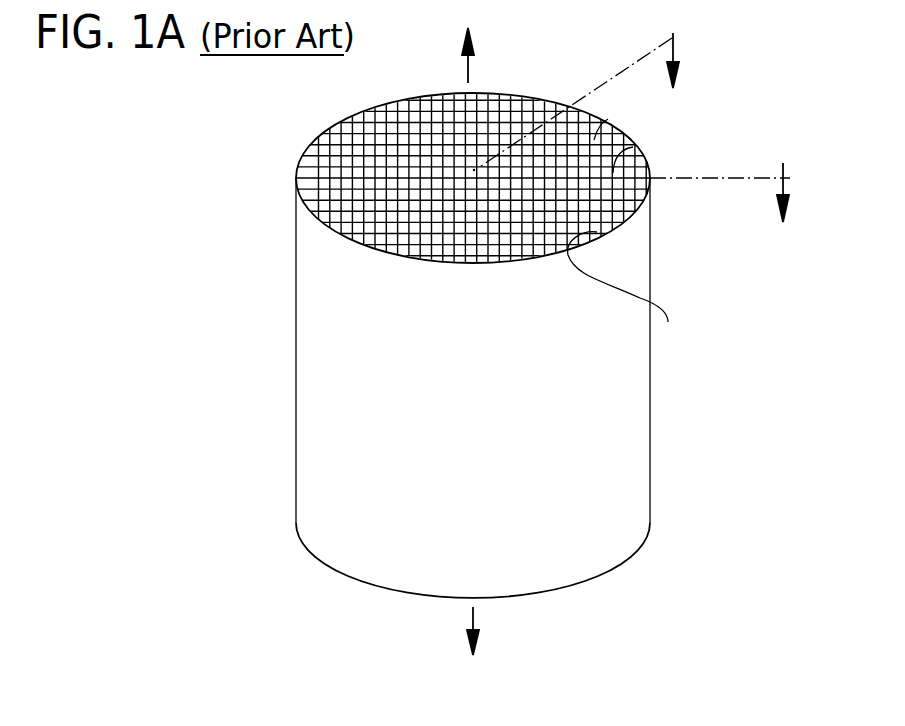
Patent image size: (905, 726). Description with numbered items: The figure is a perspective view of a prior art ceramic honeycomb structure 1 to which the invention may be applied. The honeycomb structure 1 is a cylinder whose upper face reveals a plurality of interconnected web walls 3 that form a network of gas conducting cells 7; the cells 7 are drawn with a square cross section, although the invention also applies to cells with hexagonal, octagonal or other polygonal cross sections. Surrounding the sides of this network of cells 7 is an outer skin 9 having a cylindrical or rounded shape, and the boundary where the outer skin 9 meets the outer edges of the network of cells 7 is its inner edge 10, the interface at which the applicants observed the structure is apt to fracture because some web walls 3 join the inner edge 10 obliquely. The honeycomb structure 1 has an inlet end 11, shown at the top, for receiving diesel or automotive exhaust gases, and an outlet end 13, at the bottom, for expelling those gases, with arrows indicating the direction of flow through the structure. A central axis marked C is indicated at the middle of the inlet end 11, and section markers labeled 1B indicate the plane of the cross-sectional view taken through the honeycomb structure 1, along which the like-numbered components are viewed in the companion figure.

The honeycomb structure 1 is at (240, 321).
The web walls 3 is at (318, 180).
The gas conducting cells 7 is at (590, 118).
The outer skin 9 is at (637, 228).
The inner edge 10 is at (627, 289).
The inlet end 11 is at (452, 94).
The outlet end 13 is at (525, 597).
The central axis C is at (476, 173).
The section line 1B- 1B is at (724, 115).